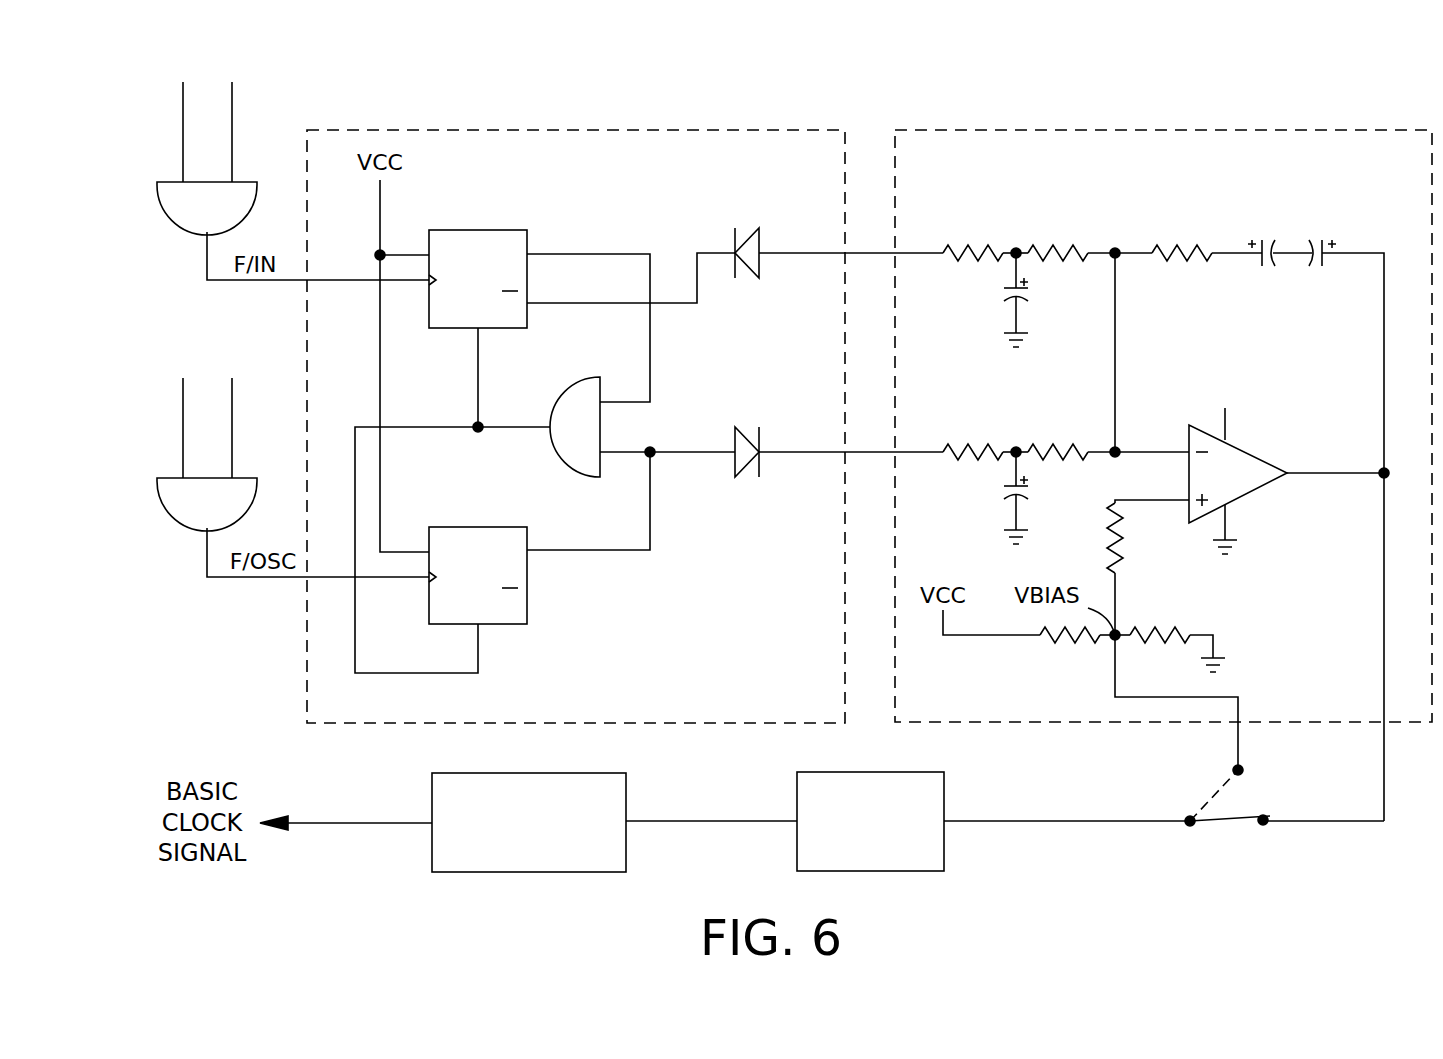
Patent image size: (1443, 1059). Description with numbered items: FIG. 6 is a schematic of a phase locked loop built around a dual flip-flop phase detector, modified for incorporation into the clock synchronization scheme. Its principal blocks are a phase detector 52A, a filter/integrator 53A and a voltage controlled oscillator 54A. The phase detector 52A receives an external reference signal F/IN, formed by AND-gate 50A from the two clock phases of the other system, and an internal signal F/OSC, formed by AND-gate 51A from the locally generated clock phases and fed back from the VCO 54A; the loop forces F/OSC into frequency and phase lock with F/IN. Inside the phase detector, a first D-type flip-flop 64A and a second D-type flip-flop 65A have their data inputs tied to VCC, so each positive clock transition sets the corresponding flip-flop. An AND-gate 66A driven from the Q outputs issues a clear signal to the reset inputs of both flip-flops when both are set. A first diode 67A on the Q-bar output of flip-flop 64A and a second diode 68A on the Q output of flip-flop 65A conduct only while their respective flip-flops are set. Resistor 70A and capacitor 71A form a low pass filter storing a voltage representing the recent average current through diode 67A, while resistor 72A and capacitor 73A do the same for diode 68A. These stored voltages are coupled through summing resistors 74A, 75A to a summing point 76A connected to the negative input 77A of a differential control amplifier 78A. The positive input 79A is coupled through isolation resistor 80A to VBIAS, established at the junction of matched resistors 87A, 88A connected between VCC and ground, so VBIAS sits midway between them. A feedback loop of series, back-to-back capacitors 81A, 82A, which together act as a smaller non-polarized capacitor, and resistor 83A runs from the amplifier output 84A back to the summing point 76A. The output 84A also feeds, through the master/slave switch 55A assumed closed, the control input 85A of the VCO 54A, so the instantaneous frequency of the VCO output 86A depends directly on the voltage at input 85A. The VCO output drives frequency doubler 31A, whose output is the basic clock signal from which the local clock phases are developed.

The frequency doubler 31A is at (432, 796).
The AND-gate 50A is at (163, 207).
The AND-gate 51A is at (163, 503).
The phase detector 52A is at (661, 213).
The filter/integrator 53A is at (1382, 198).
The voltage controlled oscillator 54A is at (797, 790).
The master/slave switch 55A is at (1225, 824).
The first D-type flip-flop 64A is at (478, 230).
The second D-type flip-flop 65A is at (490, 527).
The AND-gate 66A is at (563, 392).
The first diode 67A is at (748, 272).
The second diode 68A is at (745, 427).
The resistor 70A is at (990, 245).
The capacitor 71A is at (1010, 286).
The resistor 72A is at (990, 445).
The capacitor 73A is at (1010, 488).
The summing resistor 74A is at (1075, 245).
The summing resistor 75A is at (1080, 440).
The summing point 76A is at (1115, 468).
The negative input 77A is at (1152, 449).
The differential control amplifier 78A is at (1243, 447).
The positive input 79A is at (1140, 502).
The isolation resistor 80A is at (1108, 532).
The capacitor 81A is at (1325, 258).
The capacitor 82A is at (1258, 256).
The resistor 83A is at (1165, 245).
The output 84A is at (1293, 477).
The control input 85A is at (950, 821).
The output 86A is at (789, 823).
The matched resistor 87A is at (1073, 640).
The matched resistor 88A is at (1173, 633).